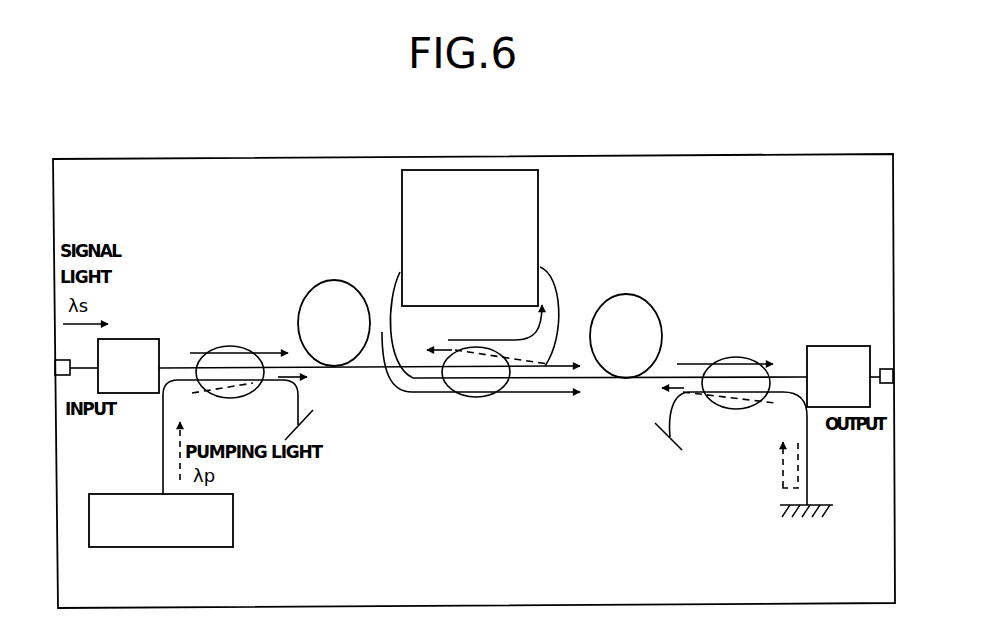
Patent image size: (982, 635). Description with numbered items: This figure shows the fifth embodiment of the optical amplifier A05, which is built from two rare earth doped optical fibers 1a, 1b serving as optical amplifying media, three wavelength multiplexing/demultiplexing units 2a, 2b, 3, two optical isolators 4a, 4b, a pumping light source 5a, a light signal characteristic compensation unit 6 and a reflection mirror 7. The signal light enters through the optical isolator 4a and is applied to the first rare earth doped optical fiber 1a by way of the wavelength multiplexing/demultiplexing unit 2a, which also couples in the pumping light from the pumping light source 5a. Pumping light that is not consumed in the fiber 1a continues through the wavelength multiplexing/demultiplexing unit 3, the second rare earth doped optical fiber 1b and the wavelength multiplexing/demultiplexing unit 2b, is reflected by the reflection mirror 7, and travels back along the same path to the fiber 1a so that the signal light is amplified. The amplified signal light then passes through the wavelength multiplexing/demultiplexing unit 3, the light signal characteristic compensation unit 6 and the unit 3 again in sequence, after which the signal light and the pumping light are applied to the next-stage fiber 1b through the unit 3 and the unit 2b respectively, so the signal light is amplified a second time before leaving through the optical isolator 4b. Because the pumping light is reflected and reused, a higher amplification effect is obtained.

The optical amplifier A05 is at (670, 153).
The rare earth doped optical fiber 1a is at (335, 280).
The rare earth doped optical fiber 1b is at (625, 294).
The wavelength multiplexing/demultiplexing unit 2a is at (230, 347).
The wavelength multiplexing/demultiplexing unit 2b is at (735, 357).
The wavelength multiplexing/demultiplexing unit 3 is at (470, 397).
The optical isolator 4a is at (130, 339).
The optical isolator 4b is at (833, 346).
The pumping light source 5a is at (233, 515).
The light signal characteristic compensation unit 6 is at (538, 218).
The reflection mirror 7 is at (820, 505).